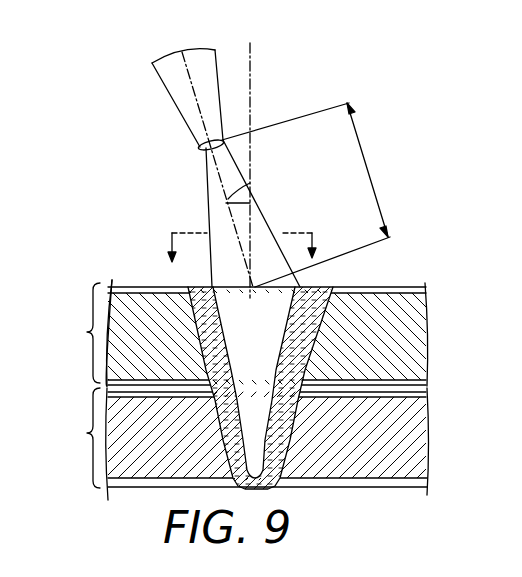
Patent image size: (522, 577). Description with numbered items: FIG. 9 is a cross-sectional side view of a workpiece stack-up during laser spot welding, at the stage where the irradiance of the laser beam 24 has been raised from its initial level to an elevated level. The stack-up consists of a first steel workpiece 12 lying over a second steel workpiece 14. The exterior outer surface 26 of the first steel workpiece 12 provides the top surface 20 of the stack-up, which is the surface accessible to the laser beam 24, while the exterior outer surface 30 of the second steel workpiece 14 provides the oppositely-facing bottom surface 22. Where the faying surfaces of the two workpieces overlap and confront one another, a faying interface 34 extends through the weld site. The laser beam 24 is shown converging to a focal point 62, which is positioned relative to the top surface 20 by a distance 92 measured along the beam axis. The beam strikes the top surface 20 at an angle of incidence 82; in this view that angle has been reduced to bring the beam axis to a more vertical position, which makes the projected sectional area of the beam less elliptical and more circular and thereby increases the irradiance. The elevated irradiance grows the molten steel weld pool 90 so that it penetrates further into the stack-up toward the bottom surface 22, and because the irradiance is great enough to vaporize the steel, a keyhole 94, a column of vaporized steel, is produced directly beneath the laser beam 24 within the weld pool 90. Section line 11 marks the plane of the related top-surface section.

The section line 11- 11 is at (244, 245).
The first steel workpiece 12 is at (88, 332).
The second steel workpiece 14 is at (88, 433).
The top surface 20 is at (378, 287).
The bottom surface 22 is at (317, 488).
The laser beam 24 is at (182, 93).
The exterior outer surface 26 is at (412, 286).
The exterior outer surface 30 is at (388, 488).
The faying interface 34 is at (183, 393).
The focal point 62 is at (203, 152).
The angle of incidence 82 is at (249, 182).
The molten steel weld pool 90 is at (200, 318).
The distance 92 is at (368, 177).
The keyhole 94 is at (268, 318).